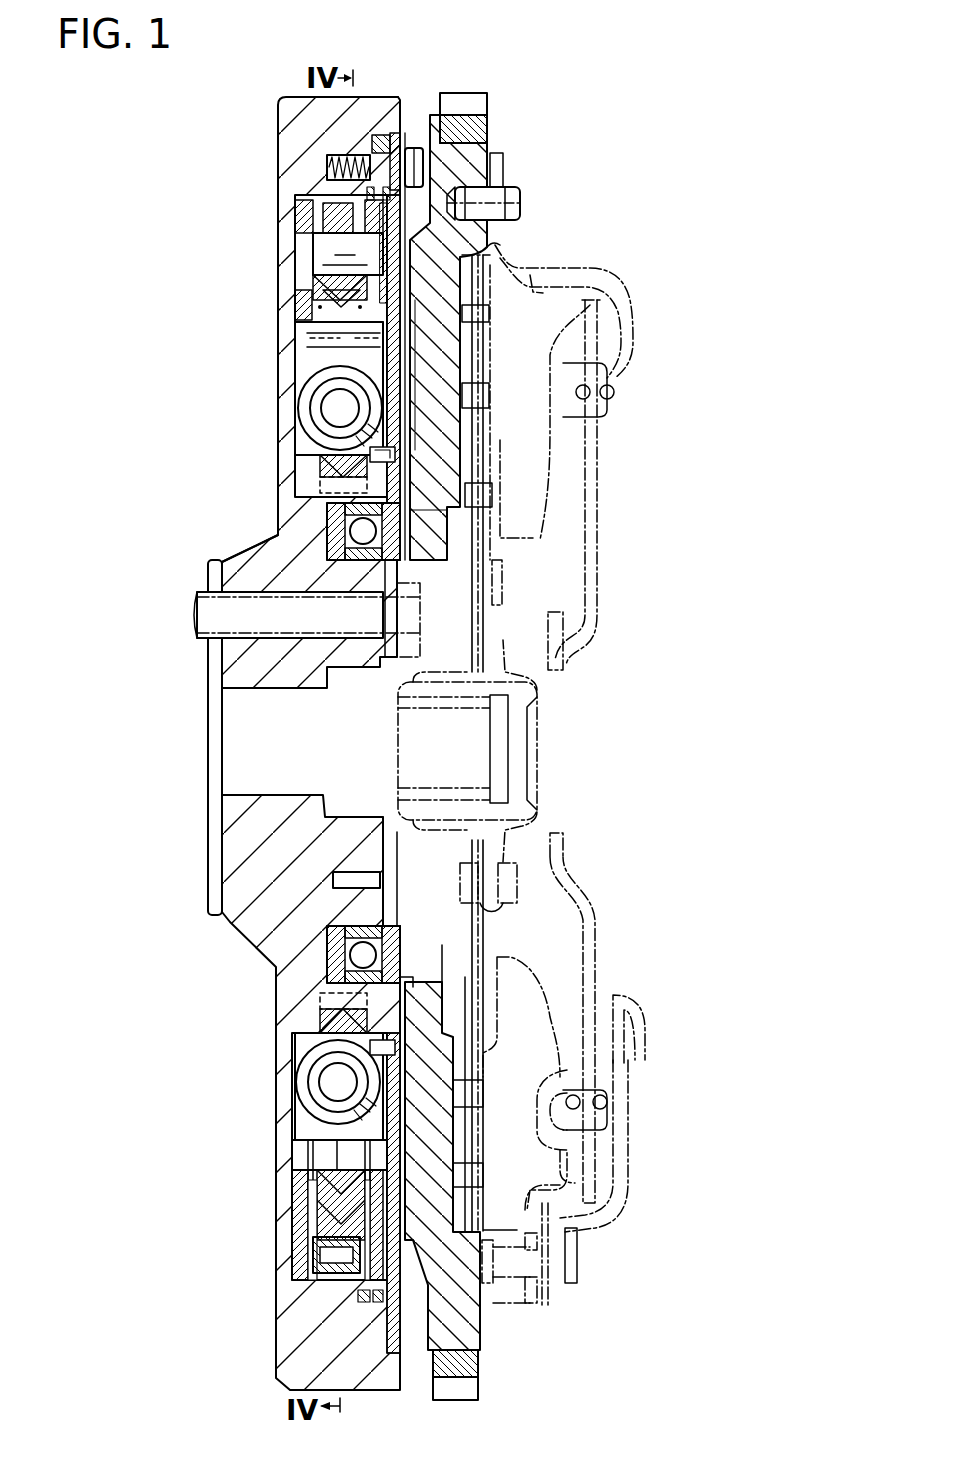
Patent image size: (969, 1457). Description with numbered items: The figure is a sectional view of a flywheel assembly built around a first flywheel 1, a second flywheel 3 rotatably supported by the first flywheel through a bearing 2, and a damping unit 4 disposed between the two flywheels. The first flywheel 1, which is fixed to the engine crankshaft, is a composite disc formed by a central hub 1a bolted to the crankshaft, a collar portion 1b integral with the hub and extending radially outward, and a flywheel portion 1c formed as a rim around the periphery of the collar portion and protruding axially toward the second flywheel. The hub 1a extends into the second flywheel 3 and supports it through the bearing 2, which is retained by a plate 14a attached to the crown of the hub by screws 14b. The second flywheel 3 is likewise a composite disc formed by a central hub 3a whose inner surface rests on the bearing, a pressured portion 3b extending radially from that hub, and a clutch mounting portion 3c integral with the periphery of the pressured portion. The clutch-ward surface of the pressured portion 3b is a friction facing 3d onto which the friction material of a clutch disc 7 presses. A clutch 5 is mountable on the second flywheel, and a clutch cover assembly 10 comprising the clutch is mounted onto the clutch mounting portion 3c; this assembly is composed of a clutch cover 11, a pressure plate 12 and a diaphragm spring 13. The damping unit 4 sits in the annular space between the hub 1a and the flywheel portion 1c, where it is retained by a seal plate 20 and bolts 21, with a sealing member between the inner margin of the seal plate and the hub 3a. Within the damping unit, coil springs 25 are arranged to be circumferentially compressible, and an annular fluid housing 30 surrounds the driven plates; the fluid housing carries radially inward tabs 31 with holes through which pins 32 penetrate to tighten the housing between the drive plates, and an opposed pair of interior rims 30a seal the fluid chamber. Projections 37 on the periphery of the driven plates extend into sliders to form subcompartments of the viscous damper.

The first flywheel 1 is at (248, 972).
The central hub 1a is at (268, 547).
The collar portion 1b is at (280, 367).
The flywheel portion 1c is at (362, 110).
The bearing 2 is at (323, 520).
The second flywheel 3 is at (490, 180).
The central hub 3a is at (410, 497).
The pressured portion 3b is at (440, 377).
The clutch mounting portion 3c is at (483, 143).
The friction facing 3d is at (530, 295).
The damping unit 4 is at (282, 306).
The clutch 5 is at (652, 392).
The clutch disc 7 is at (492, 468).
The clutch cover assembly 10 is at (650, 354).
The clutch cover 11 is at (610, 417).
The pressure plate 12 is at (570, 265).
The diaphragm spring 13 is at (600, 553).
The plate 14a is at (395, 655).
The screws 14b is at (462, 658).
The seal plate 20 is at (367, 142).
The bolts 21 is at (413, 145).
The coil springs 25 is at (305, 1075).
The fluid housing 30 is at (300, 1232).
The interior rims 30a is at (320, 334).
The tabs 31 is at (340, 207).
The pins 32 is at (320, 242).
The projections 37 is at (297, 1268).